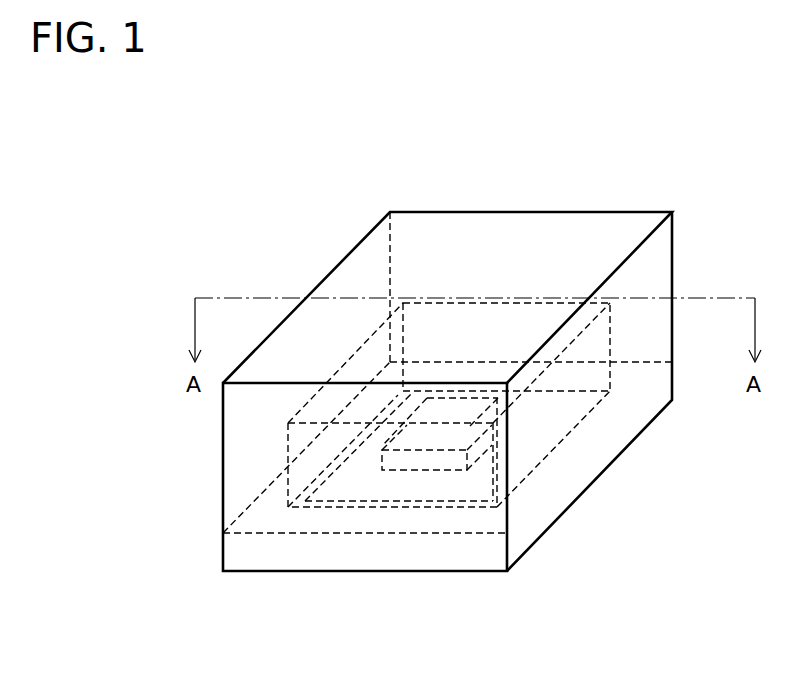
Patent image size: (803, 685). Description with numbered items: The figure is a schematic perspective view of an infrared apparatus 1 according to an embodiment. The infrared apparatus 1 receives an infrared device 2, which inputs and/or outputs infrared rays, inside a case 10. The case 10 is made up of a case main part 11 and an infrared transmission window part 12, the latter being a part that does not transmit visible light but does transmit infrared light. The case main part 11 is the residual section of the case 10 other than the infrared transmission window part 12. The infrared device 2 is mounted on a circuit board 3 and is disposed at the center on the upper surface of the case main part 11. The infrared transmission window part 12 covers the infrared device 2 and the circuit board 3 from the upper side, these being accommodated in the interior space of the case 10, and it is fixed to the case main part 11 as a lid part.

The infrared apparatus 1 is at (672, 152).
The case 10 is at (392, 246).
The case main part 11 is at (237, 548).
The infrared transmission window part 12 is at (237, 480).
The circuit board 3 is at (353, 488).
The infrared device 2 is at (423, 466).